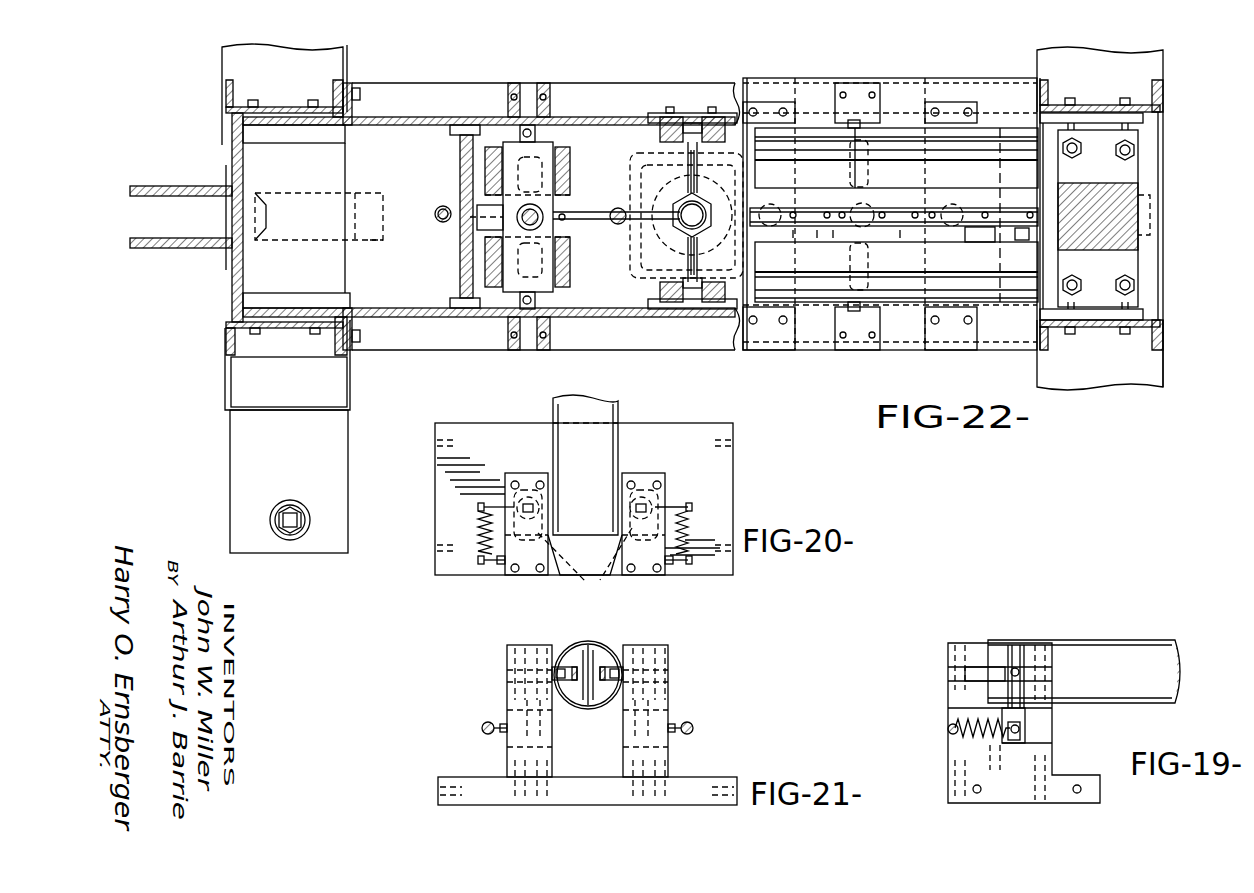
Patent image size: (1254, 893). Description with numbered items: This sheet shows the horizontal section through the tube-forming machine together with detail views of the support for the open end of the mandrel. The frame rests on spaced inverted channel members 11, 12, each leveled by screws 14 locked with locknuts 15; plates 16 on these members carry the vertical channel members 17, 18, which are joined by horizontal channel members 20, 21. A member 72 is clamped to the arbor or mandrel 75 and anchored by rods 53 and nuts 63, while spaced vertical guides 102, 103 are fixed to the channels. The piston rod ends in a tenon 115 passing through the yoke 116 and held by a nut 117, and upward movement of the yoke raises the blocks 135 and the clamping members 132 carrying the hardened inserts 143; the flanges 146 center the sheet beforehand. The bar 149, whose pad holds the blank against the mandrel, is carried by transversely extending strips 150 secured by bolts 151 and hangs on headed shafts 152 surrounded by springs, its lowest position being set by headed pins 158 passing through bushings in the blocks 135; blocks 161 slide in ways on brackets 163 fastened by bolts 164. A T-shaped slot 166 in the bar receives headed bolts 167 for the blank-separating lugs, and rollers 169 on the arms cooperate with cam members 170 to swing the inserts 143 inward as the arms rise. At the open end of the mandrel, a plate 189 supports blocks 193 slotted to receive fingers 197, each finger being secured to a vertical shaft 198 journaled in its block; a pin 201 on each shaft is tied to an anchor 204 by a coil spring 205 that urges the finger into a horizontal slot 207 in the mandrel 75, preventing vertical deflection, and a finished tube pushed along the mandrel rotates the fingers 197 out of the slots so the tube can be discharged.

In FIG. 22, the inverted channel member 11 is at (340, 524).
In FIG. 22, the inverted channel member 12 is at (1158, 370).
In FIG. 22, the screw 14 is at (288, 510).
In FIG. 22, the locknut 15 is at (293, 524).
In FIG. 22, the plate 16 is at (345, 388).
In FIG. 22, the vertical channel member 17 is at (228, 106).
In FIG. 22, the vertical channel member 18 is at (1160, 100).
In FIG. 22, the horizontal channel member 20 is at (594, 90).
In FIG. 22, the horizontal channel member 21 is at (592, 348).
In FIG. 22, the rod 53 is at (1125, 155).
In FIG. 22, the nut 63 is at (1134, 150).
In FIG. 22, the member 72 is at (1125, 188).
In FIG. 22, the arbor or mandrel 75 is at (365, 242).
In FIG. 20, the arbor or mandrel 75 is at (615, 412).
In FIG. 21, the arbor or mandrel 75 is at (582, 646).
In FIG. 19, the arbor or mandrel 75 is at (1120, 642).
In FIG. 22, the vertical guide 102 is at (661, 310).
In FIG. 22, the vertical guide 103 is at (660, 119).
In FIG. 22, the tenon 115 is at (696, 208).
In FIG. 22, the yoke 116 is at (636, 153).
In FIG. 22, the nut 117 is at (684, 200).
In FIG. 22, the clamping member 132 is at (553, 160).
In FIG. 22, the block 135 is at (553, 199).
In FIG. 22, the hardened insert 143 is at (1020, 178).
In FIG. 22, the flange 146 is at (1008, 132).
In FIG. 22, the bar 149 is at (894, 212).
In FIG. 22, the transversely extending strip 150 is at (758, 340).
In FIG. 22, the bolt 151 is at (785, 340).
In FIG. 22, the headed shaft 152 is at (442, 211).
In FIG. 22, the headed pin 158 is at (525, 222).
In FIG. 22, the block 161 is at (485, 228).
In FIG. 22, the bracket 163 is at (460, 284).
In FIG. 22, the bolt 164 is at (465, 125).
In FIG. 22, the T-shaped slot 166 is at (980, 242).
In FIG. 22, the headed bolt 167 is at (1022, 237).
In FIG. 22, the cam follower roller 169 is at (545, 160).
In FIG. 22, the cam member 170 is at (535, 130).
In FIG. 20, the plate 189 is at (733, 458).
In FIG. 21, the plate 189 is at (721, 780).
In FIG. 19, the plate 189 is at (1095, 792).
In FIG. 21, the block 193 is at (512, 752).
In FIG. 19, the block 193 is at (952, 750).
In FIG. 20, the finger 197 is at (585, 564).
In FIG. 21, the finger 197 is at (583, 656).
In FIG. 19, the finger 197 is at (1024, 670).
In FIG. 20, the shaft 198 is at (665, 493).
In FIG. 21, the shaft 198 is at (530, 705).
In FIG. 19, the shaft 198 is at (1025, 715).
In FIG. 20, the pin 201 is at (683, 508).
In FIG. 19, the pin 201 is at (1022, 732).
In FIG. 20, the anchor 204 is at (688, 562).
In FIG. 19, the anchor 204 is at (952, 728).
In FIG. 20, the coil spring 205 is at (686, 528).
In FIG. 21, the coil spring 205 is at (482, 729).
In FIG. 19, the coil spring 205 is at (957, 726).
In FIG. 22, the slot 207 is at (265, 241).
In FIG. 21, the slot 207 is at (573, 680).